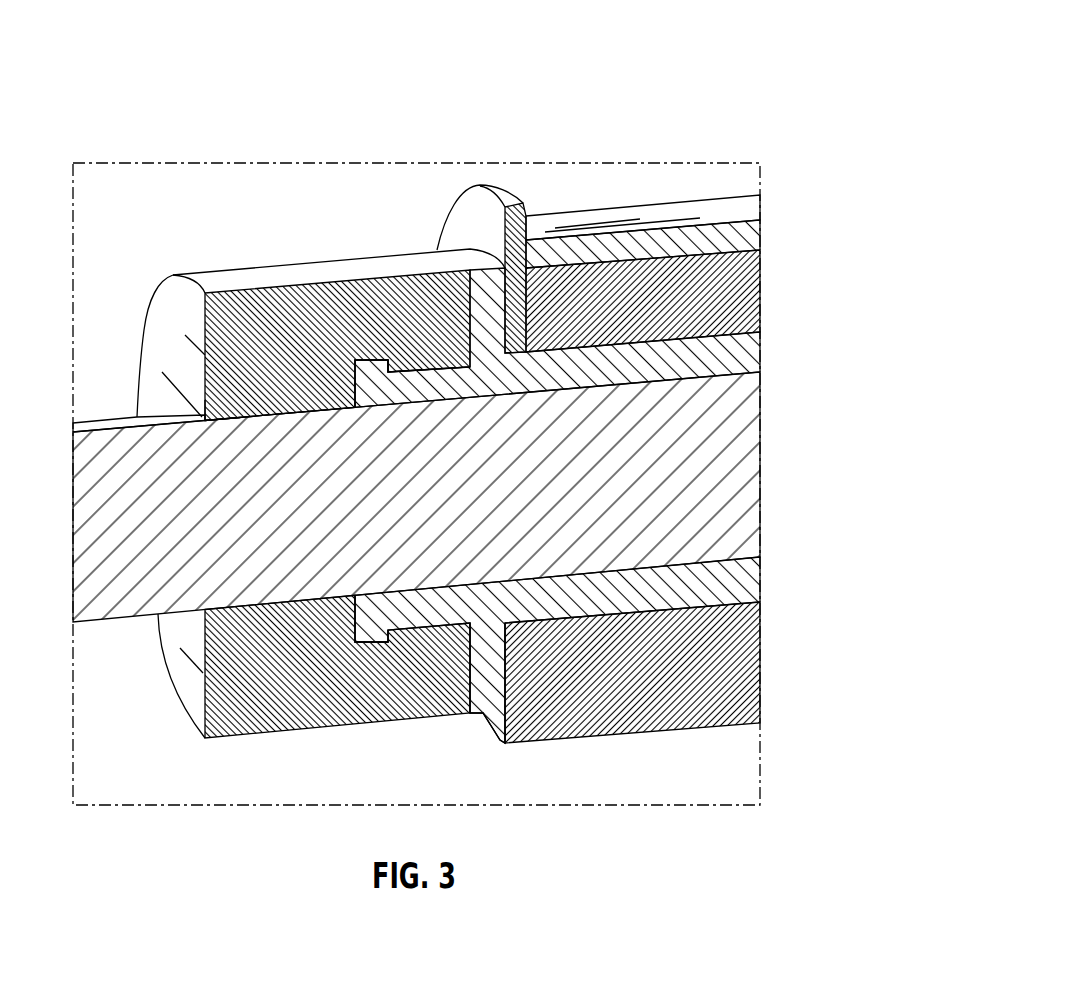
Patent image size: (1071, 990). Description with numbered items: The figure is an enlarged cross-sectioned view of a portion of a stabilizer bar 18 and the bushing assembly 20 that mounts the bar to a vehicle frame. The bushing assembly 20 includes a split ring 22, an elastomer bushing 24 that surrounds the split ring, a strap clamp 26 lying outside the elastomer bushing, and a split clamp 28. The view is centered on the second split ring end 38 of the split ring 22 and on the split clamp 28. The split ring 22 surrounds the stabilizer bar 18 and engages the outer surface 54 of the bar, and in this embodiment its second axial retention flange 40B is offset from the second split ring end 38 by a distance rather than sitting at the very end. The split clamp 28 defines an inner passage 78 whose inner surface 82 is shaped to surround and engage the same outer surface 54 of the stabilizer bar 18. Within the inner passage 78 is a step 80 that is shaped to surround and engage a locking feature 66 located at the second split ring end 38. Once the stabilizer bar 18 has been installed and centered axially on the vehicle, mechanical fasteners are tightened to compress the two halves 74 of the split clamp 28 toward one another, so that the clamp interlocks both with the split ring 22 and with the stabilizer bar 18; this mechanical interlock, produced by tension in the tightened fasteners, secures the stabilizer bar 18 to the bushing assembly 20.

The stabilizer bar 18 is at (118, 548).
The bushing assembly 20 is at (727, 57).
The split ring 22 is at (770, 348).
The elastomer bushing 24 is at (728, 318).
The strap clamp 26 is at (681, 190).
The split clamp 28 is at (200, 267).
The second split ring end 38 is at (354, 358).
The second axial retention flange 40B is at (488, 693).
The outer surface 54 is at (93, 420).
The locking feature 66 is at (418, 668).
The halves 74 is at (327, 281).
The inner passage 78 is at (213, 424).
The step 80 is at (395, 378).
The inner surface 82 is at (274, 418).